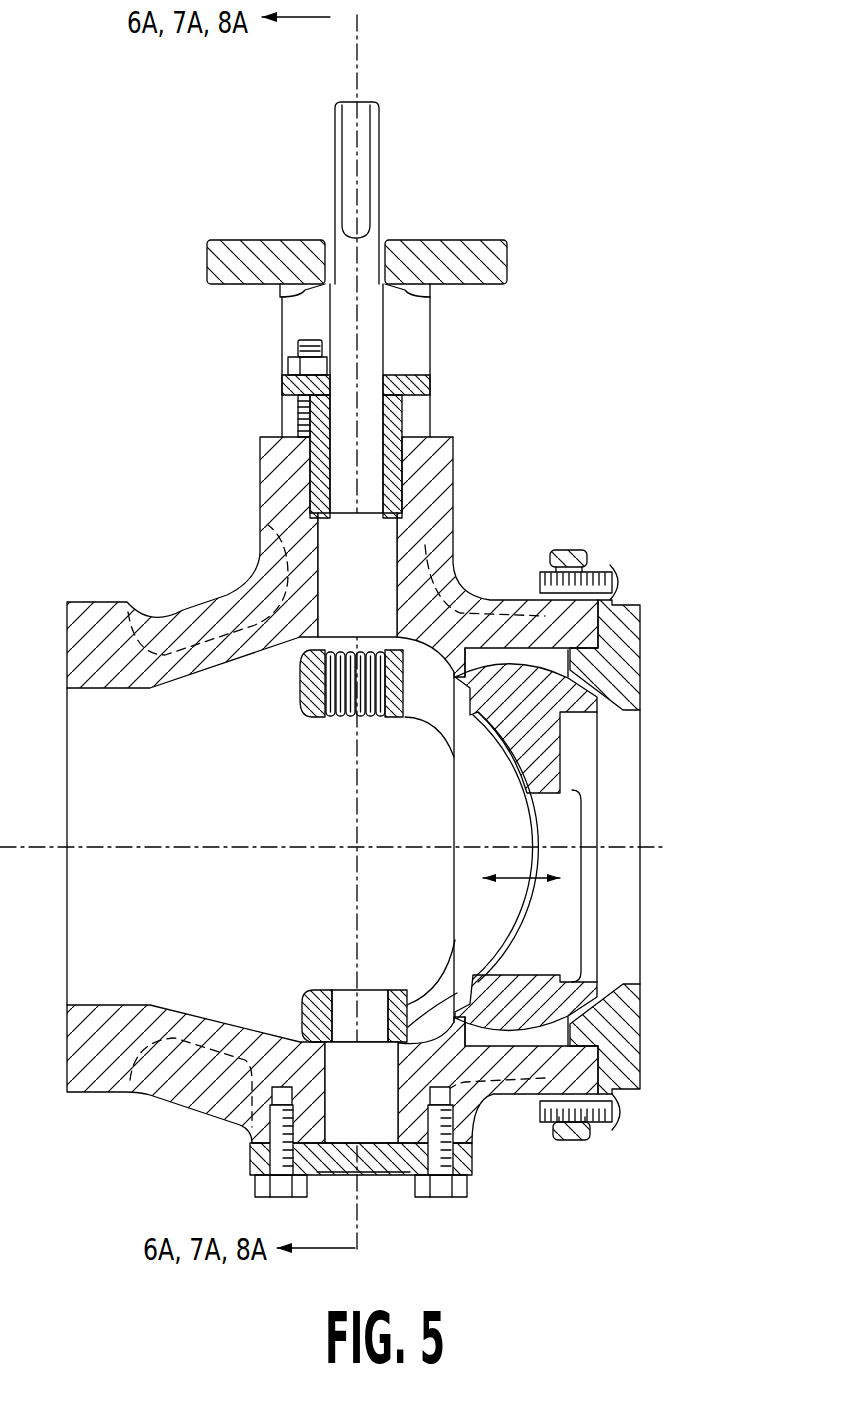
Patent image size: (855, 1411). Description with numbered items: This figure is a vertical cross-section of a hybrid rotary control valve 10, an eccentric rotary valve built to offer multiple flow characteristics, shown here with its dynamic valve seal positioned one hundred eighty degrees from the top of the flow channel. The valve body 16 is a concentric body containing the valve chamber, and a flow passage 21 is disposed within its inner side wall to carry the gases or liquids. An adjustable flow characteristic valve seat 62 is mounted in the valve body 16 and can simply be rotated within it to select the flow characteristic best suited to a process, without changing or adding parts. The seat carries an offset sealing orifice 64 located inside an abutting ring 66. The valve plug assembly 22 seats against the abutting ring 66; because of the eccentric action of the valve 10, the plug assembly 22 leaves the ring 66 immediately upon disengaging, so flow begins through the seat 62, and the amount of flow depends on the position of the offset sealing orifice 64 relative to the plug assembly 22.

The hybrid rotary control valve 10 is at (180, 438).
The valve body 16 is at (228, 630).
The flow passage 21 is at (538, 882).
The valve plug assembly 22 is at (507, 823).
The adjustable flow characteristic valve seat 62 is at (506, 675).
The offset sealing orifice 64 is at (587, 882).
The abutting ring 66 is at (479, 748).